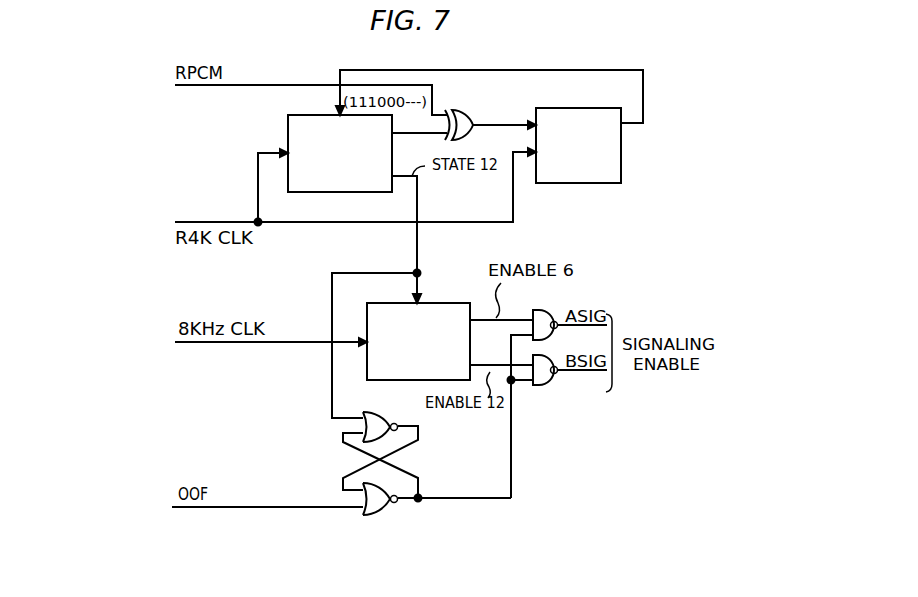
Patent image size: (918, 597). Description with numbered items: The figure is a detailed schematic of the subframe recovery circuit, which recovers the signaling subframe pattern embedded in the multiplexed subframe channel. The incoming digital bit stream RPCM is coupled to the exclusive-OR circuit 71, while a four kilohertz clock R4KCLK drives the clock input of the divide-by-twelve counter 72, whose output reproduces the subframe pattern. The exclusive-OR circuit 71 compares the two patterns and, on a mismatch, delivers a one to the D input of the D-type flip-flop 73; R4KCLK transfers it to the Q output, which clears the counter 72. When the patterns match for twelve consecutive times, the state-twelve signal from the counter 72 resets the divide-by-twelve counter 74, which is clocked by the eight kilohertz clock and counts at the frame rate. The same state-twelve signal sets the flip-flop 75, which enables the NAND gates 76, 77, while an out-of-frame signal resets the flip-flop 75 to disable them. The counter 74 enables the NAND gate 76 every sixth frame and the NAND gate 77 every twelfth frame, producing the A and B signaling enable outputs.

The exclusive-OR circuit 71 is at (467, 112).
The divide-by-twelve counter 72 is at (288, 131).
The D-type flip-flop 73 is at (621, 168).
The divide-by-twelve counter 74 is at (442, 303).
The flip-flop 75 is at (442, 468).
The NAND gate 76 is at (546, 310).
The NAND gate 77 is at (541, 388).